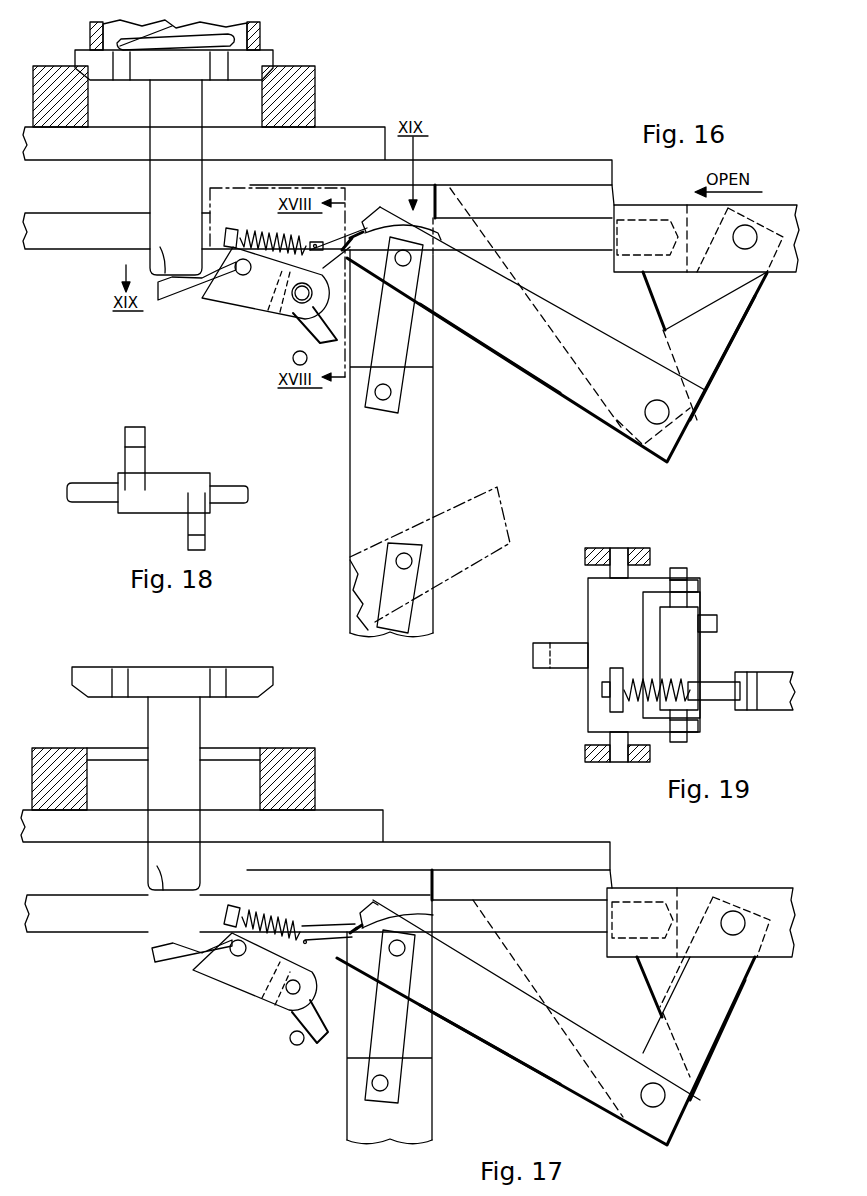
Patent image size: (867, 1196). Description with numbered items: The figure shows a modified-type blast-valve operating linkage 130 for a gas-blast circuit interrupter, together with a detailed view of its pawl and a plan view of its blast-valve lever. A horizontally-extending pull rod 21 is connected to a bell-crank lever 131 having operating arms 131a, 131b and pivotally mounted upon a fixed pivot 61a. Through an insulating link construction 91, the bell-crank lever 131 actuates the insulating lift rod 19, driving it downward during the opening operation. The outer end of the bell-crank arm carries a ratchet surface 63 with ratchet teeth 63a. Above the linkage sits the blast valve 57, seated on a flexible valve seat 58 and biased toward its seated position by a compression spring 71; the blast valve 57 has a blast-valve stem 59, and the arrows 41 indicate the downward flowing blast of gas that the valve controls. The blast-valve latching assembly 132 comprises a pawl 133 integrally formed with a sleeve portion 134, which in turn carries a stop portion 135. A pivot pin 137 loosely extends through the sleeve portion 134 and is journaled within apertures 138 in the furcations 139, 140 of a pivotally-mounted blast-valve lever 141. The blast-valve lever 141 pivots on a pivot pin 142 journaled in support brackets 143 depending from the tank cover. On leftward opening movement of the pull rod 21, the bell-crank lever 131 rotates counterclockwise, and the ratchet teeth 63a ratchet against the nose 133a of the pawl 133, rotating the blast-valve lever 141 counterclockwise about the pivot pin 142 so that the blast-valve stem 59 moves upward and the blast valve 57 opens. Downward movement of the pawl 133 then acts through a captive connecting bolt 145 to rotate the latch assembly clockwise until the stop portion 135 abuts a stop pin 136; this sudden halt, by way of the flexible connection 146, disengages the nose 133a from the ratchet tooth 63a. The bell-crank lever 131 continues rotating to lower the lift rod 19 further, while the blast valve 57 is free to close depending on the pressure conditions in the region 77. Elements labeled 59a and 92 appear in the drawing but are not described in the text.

In FIG. 16, the lift rod 19 is at (350, 471).
In FIG. 16, the pull rod 21 is at (568, 255).
In FIG. 17, the pull rod 21 is at (513, 904).
In FIG. 17, the arrows 41 is at (78, 707).
In FIG. 16, the blast valve 57 is at (268, 60).
In FIG. 17, the blast valve 57 is at (274, 693).
In FIG. 17, the valve seat 58 is at (84, 750).
In FIG. 16, the blast-valve stem 59 is at (150, 186).
In FIG. 17, the blast-valve stem 59 is at (200, 785).
In FIG. 16, the stem foot 59a is at (158, 248).
In FIG. 17, the stem foot 59a is at (160, 882).
In FIG. 16, the fixed pivot 61a is at (667, 420).
In FIG. 17, the fixed pivot 61a is at (670, 1105).
In FIG. 16, the ratchet surface 63 is at (366, 230).
In FIG. 17, the ratchet surface 63 is at (364, 903).
In FIG. 19, the ratchet surface 63 is at (748, 672).
In FIG. 16, the ratchet teeth 63a is at (430, 230).
In FIG. 17, the ratchet teeth 63a is at (418, 920).
In FIG. 16, the compression spring 71 is at (200, 40).
In FIG. 16, the region 77 is at (173, 37).
In FIG. 16, the insulating link construction 91 is at (398, 378).
In FIG. 17, the insulating link construction 91 is at (391, 1064).
In FIG. 16, the block 92 is at (315, 70).
In FIG. 17, the block 92 is at (316, 775).
In FIG. 16, the blast-valve operating linkage 130 is at (250, 333).
In FIG. 17, the blast-valve operating linkage 130 is at (239, 1020).
In FIG. 16, the bell-crank lever 131 is at (566, 392).
In FIG. 17, the bell-crank lever 131 is at (527, 1055).
In FIG. 16, the operating arm 131a is at (490, 344).
In FIG. 17, the operating arm 131a is at (488, 1047).
In FIG. 16, the operating arm 131b is at (736, 315).
In FIG. 17, the operating arm 131b is at (735, 996).
In FIG. 16, the blast-valve latching assembly 132 is at (215, 302).
In FIG. 17, the blast-valve latching assembly 132 is at (210, 975).
In FIG. 16, the pawl 133 is at (350, 244).
In FIG. 17, the pawl 133 is at (317, 930).
In FIG. 18, the pawl 133 is at (141, 460).
In FIG. 19, the pawl 133 is at (720, 700).
In FIG. 16, the nose 133a is at (352, 228).
In FIG. 17, the nose 133a is at (352, 925).
In FIG. 18, the nose 133a is at (128, 438).
In FIG. 19, the nose 133a is at (746, 708).
In FIG. 18, the sleeve portion 134 is at (182, 474).
In FIG. 19, the sleeve portion 134 is at (700, 650).
In FIG. 16, the stop portion 135 is at (319, 337).
In FIG. 17, the stop portion 135 is at (320, 1050).
In FIG. 18, the stop portion 135 is at (205, 543).
In FIG. 19, the stop portion 135 is at (718, 623).
In FIG. 16, the stop pin 136 is at (293, 358).
In FIG. 17, the stop pin 136 is at (290, 1042).
In FIG. 18, the pivot pin 137 is at (222, 487).
In FIG. 19, the pivot pin 137 is at (686, 568).
In FIG. 16, the apertures 138 is at (297, 308).
In FIG. 19, the apertures 138 is at (700, 585).
In FIG. 19, the furcation 139 is at (657, 582).
In FIG. 16, the furcation 140 is at (270, 313).
In FIG. 17, the furcation 140 is at (263, 1007).
In FIG. 19, the furcation 140 is at (656, 727).
In FIG. 16, the blast-valve lever 141 is at (178, 297).
In FIG. 17, the blast-valve lever 141 is at (170, 958).
In FIG. 19, the blast-valve lever 141 is at (588, 607).
In FIG. 16, the pivot pin 142 is at (243, 275).
In FIG. 17, the pivot pin 142 is at (238, 956).
In FIG. 19, the pivot pin 142 is at (608, 572).
In FIG. 19, the support brackets 143 is at (640, 548).
In FIG. 16, the captive connecting bolt 145 is at (230, 230).
In FIG. 17, the captive connecting bolt 145 is at (230, 917).
In FIG. 16, the flexible connection 146 is at (261, 228).